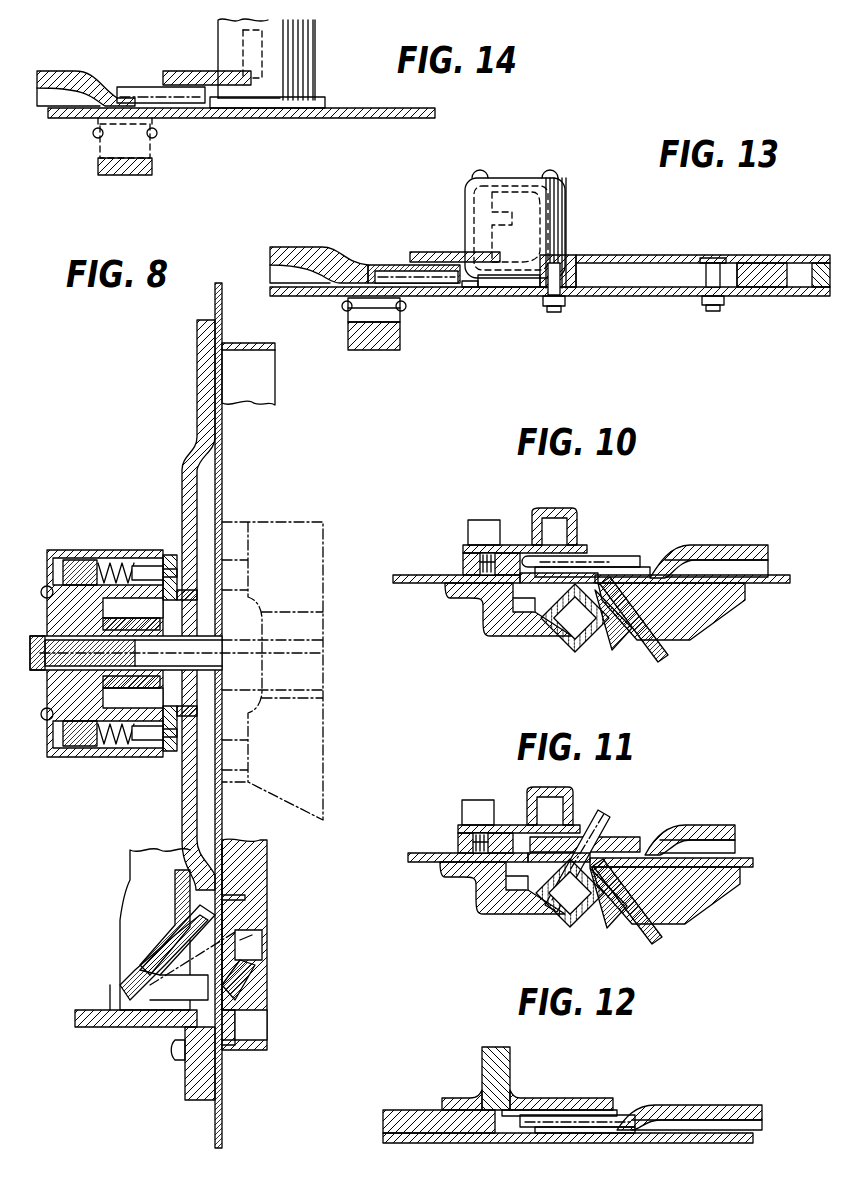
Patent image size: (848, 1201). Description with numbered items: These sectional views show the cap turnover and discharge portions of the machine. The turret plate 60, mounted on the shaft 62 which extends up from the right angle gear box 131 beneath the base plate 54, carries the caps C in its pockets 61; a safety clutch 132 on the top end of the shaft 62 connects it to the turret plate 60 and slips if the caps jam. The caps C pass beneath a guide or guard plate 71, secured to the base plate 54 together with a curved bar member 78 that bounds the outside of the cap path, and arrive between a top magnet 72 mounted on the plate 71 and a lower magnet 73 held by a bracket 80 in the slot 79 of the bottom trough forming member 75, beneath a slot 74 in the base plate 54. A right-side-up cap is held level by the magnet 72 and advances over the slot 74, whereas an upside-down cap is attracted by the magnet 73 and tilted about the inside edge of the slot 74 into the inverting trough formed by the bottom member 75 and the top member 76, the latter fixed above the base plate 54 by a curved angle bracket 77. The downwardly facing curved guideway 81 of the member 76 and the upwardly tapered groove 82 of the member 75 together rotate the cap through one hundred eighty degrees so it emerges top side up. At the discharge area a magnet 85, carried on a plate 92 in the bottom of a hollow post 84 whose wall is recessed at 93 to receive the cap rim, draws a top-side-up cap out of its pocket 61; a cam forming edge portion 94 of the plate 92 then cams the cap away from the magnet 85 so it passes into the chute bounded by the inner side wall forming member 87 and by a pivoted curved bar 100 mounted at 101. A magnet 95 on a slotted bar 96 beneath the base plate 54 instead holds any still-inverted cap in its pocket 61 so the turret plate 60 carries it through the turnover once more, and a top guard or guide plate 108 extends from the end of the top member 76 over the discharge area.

In FIG. 14, the base plate 54 is at (279, 119).
In FIG. 13, the base plate 54 is at (797, 297).
In FIG. 8, the base plate 54 is at (215, 300).
In FIG. 10, the base plate 54 is at (765, 584).
In FIG. 11, the base plate 54 is at (750, 868).
In FIG. 12, the base plate 54 is at (655, 1143).
In FIG. 14, the turret plate 60 is at (66, 70).
In FIG. 13, the turret plate 60 is at (329, 252).
In FIG. 8, the turret plate 60 is at (182, 461).
In FIG. 10, the turret plate 60 is at (732, 545).
In FIG. 11, the turret plate 60 is at (735, 825).
In FIG. 12, the turret plate 60 is at (708, 1105).
In FIG. 13, the pockets 61 is at (386, 264).
In FIG. 8, the pockets 61 is at (188, 907).
In FIG. 11, the pockets 61 is at (620, 840).
In FIG. 8, the shaft 62 is at (198, 655).
In FIG. 10, the guide or guard plate 71 is at (515, 545).
In FIG. 11, the guide or guard plate 71 is at (511, 825).
In FIG. 10, the top magnet 72 is at (563, 508).
In FIG. 11, the top magnet 72 is at (573, 792).
In FIG. 10, the lower magnet 73 is at (575, 646).
In FIG. 11, the lower magnet 73 is at (568, 915).
In FIG. 8, the aperture or slot 74 is at (238, 985).
In FIG. 10, the aperture or slot 74 is at (591, 568).
In FIG. 12, the aperture or slot 74 is at (546, 1143).
In FIG. 8, the bottom trough forming member 75 is at (262, 912).
In FIG. 10, the bottom trough forming member 75 is at (505, 640).
In FIG. 11, the bottom trough forming member 75 is at (480, 918).
In FIG. 8, the top trough forming member 76 is at (125, 915).
In FIG. 12, the top trough forming member 76 is at (510, 1065).
In FIG. 8, the curved angle bracket 77 is at (145, 1028).
In FIG. 12, the curved angle bracket 77 is at (482, 1062).
In FIG. 10, the curved bar member 78 is at (463, 566).
In FIG. 11, the curved bar member 78 is at (485, 826).
In FIG. 10, the slot 79 is at (622, 641).
In FIG. 11, the slot 79 is at (608, 898).
In FIG. 10, the bracket 80 is at (656, 659).
In FIG. 11, the bracket 80 is at (660, 930).
In FIG. 8, the curved guideway 81 is at (140, 990).
In FIG. 8, the groove 82 is at (252, 948).
In FIG. 10, the groove 82 is at (540, 612).
In FIG. 11, the groove 82 is at (518, 892).
In FIG. 14, the hollow post 84 is at (218, 36).
In FIG. 13, the hollow post 84 is at (518, 180).
In FIG. 14, the magnet 85 is at (317, 32).
In FIG. 13, the magnet 85 is at (566, 209).
In FIG. 13, the inner side wall forming member 87 is at (540, 297).
In FIG. 13, the plate 92 is at (500, 289).
In FIG. 13, the recess 93 is at (470, 289).
In FIG. 14, the cam forming edge portion 94 is at (325, 103).
In FIG. 13, the cam forming edge portion 94 is at (578, 282).
In FIG. 14, the magnet 95 is at (150, 138).
In FIG. 13, the magnet 95 is at (348, 325).
In FIG. 14, the bar 96 is at (100, 140).
In FIG. 13, the bar 96 is at (388, 314).
In FIG. 13, the curved bar 100 is at (690, 279).
In FIG. 13, the pivot 101 is at (727, 262).
In FIG. 14, the top guard or guide plate 108 is at (176, 70).
In FIG. 13, the top guard or guide plate 108 is at (441, 252).
In FIG. 8, the right angle gear box 131 is at (302, 524).
In FIG. 8, the safety clutch 132 is at (112, 550).
In FIG. 14, the caps C is at (133, 80).
In FIG. 13, the caps C is at (428, 265).
In FIG. 8, the caps C is at (169, 983).
In FIG. 10, the caps C is at (620, 557).
In FIG. 11, the caps C is at (607, 818).
In FIG. 12, the caps C is at (583, 1113).